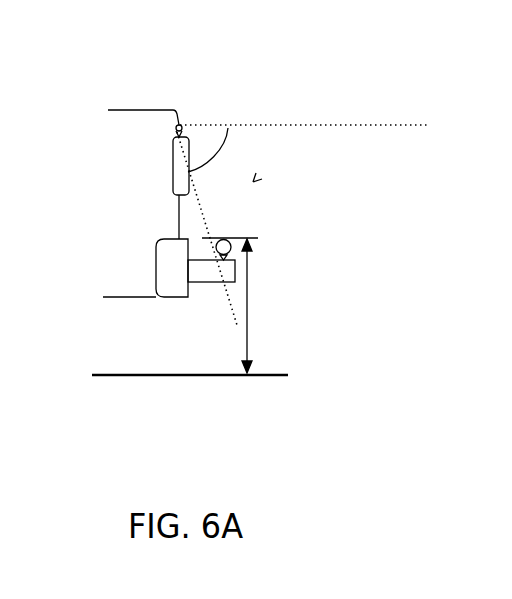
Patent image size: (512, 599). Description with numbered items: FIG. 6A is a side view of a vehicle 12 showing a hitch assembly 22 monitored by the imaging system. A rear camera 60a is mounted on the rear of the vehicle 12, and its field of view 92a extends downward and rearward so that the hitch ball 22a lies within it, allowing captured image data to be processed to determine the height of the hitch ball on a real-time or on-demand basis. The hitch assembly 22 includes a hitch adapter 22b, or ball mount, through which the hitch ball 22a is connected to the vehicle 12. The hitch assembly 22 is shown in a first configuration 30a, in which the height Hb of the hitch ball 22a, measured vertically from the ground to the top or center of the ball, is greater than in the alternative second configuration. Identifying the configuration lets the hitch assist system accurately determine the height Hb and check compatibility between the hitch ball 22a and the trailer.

The vehicle 12 is at (137, 120).
The rear camera 60a is at (180, 125).
The field of view 92a is at (228, 128).
The first configuration 30a is at (253, 182).
The hitch assembly 22 is at (212, 243).
The hitch ball 22a is at (228, 238).
The hitch adapter 22b is at (202, 282).
The height of the hitch ball Hb is at (245, 335).